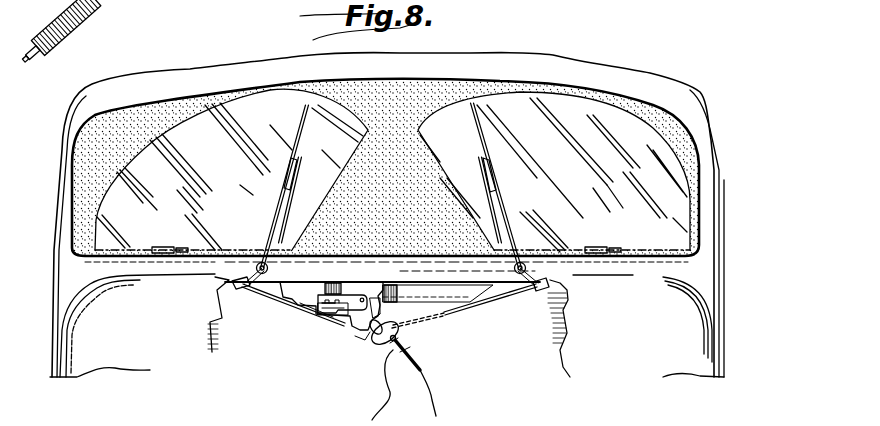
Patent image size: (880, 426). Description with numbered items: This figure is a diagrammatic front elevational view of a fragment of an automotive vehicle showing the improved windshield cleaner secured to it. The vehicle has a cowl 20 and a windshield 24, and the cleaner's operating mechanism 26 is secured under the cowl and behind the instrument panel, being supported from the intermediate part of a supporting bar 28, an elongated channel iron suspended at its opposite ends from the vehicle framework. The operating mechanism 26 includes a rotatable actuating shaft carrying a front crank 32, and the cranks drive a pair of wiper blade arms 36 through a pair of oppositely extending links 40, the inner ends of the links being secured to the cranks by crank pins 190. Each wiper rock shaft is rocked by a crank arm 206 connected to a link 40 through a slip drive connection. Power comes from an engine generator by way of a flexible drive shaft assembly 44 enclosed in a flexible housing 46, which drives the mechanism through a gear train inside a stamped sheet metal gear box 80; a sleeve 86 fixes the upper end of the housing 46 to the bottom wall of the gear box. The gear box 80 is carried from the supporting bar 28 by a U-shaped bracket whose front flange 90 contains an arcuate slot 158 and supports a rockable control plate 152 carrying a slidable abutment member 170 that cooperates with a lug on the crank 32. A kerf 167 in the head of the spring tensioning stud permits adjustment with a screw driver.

The cowl 20 is at (670, 306).
The windshield 24 is at (677, 163).
The operating mechanism 26 is at (360, 280).
The supporting bar 28 is at (408, 286).
The front crank 32 is at (385, 352).
The wiper blade arm 36 is at (283, 195).
The link 40 is at (306, 306).
The flexible drive shaft assembly 44 is at (83, 13).
The flexible housing 46 is at (415, 355).
The gear box 80 is at (427, 317).
The sleeve 86 is at (397, 338).
The front flange 90 is at (383, 303).
The control plate 152 is at (332, 295).
The arcuate slot 158 is at (358, 292).
The kerf 167 is at (364, 338).
The abutment member 170 is at (325, 314).
The crank pin 190 is at (392, 388).
The crank arm 206 is at (240, 290).